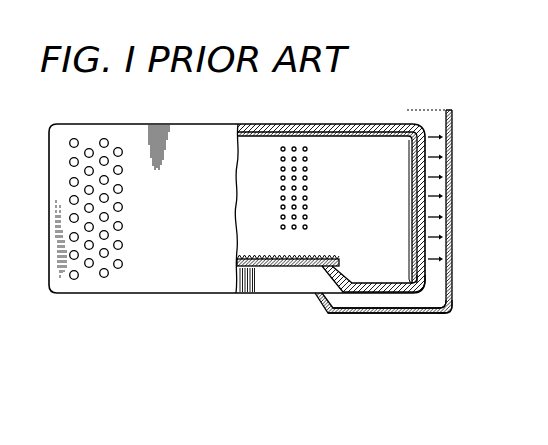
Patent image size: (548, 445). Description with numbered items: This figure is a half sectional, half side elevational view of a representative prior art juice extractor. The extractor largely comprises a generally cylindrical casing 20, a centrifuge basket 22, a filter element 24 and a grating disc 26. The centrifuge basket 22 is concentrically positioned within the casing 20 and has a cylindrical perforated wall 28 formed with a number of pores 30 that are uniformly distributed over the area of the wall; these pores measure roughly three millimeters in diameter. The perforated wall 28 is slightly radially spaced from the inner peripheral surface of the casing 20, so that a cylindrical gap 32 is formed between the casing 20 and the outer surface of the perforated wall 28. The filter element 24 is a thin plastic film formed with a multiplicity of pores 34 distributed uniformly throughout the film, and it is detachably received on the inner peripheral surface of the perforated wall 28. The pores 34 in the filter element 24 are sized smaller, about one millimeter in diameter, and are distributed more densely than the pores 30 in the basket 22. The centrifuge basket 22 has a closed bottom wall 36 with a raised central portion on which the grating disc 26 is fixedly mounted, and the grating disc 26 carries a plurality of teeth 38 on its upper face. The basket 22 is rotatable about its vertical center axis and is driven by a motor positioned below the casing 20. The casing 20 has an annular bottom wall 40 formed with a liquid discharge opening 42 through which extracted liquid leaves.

The casing 20 is at (448, 212).
The centrifuge basket 22 is at (90, 124).
The filter element 24 is at (412, 155).
The grating disc 26 is at (340, 258).
The cylindrical perforated wall 28 is at (442, 138).
The pores 30 is at (76, 279).
The cylindrical gap 32 is at (438, 276).
The pores 34 is at (307, 169).
The closed bottom wall 36 is at (357, 294).
The teeth 38 is at (248, 254).
The annular bottom wall 40 is at (375, 313).
The liquid discharge opening 42 is at (430, 313).